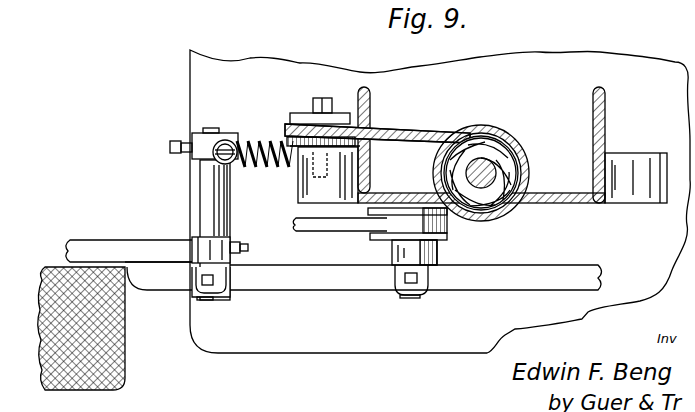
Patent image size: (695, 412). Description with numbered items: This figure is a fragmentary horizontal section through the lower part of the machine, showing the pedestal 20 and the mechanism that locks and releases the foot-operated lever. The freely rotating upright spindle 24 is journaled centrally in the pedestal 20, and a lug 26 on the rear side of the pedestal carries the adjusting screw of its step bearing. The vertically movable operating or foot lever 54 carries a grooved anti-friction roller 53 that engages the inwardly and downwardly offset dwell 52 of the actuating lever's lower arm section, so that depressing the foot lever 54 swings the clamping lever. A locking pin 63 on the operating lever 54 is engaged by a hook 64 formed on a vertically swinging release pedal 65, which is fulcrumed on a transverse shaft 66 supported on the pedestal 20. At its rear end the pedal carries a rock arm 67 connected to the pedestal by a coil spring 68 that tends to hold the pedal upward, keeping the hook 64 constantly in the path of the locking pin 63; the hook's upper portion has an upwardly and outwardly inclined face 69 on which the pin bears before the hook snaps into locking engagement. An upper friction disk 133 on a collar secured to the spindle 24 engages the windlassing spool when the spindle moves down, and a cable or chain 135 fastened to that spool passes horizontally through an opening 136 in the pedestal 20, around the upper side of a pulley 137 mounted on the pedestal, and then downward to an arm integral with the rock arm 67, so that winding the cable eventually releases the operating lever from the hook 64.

The base or pedestal 20 is at (573, 208).
The upright spindle 24 is at (520, 156).
The lug 26 is at (462, 173).
The offset portion or dwell 52 is at (322, 224).
The grooved anti-friction roller 53 is at (447, 235).
The operating or foot lever 54 is at (315, 285).
The locking pin 63 is at (203, 238).
The hook 64 is at (190, 252).
The release pedal 65 is at (88, 250).
The transverse shaft 66 is at (217, 128).
The rock arm 67 is at (207, 157).
The coil spring 68 is at (290, 169).
The inclined face 69 is at (230, 246).
The upper friction disk 133 is at (488, 143).
The cable or chain 135 is at (377, 126).
The opening 136 is at (370, 118).
The pulley 137 is at (306, 113).